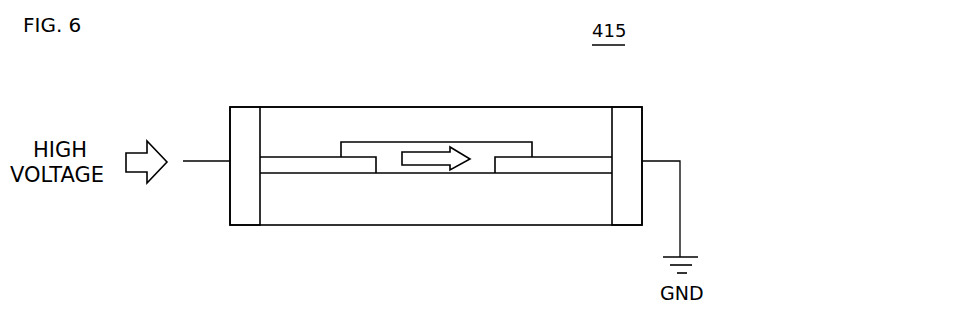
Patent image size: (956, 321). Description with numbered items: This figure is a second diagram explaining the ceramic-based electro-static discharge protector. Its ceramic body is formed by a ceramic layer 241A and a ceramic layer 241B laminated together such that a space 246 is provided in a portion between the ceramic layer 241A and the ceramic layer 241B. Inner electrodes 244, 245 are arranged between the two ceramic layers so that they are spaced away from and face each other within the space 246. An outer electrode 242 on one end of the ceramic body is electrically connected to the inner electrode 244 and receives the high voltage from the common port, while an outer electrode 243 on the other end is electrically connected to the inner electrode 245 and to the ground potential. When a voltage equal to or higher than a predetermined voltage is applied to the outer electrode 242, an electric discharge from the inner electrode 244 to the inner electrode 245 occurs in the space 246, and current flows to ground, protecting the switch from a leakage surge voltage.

The ceramic layer 241A is at (454, 227).
The ceramic layer 241B is at (427, 105).
The outer electrode 242 is at (247, 107).
The outer electrode 243 is at (627, 106).
The inner electrode 244 is at (300, 168).
The inner electrode 245 is at (569, 168).
The space 246 is at (391, 158).